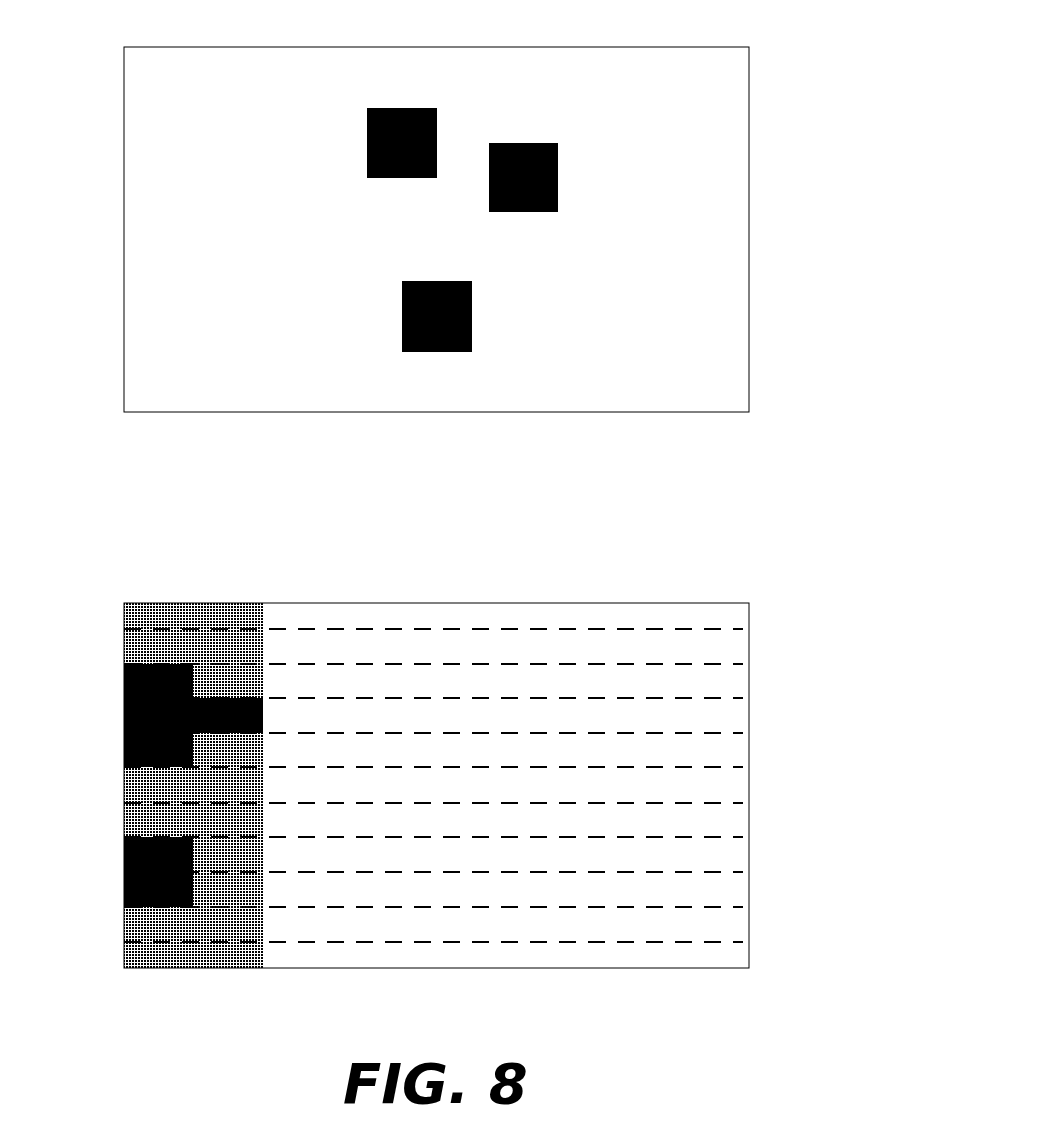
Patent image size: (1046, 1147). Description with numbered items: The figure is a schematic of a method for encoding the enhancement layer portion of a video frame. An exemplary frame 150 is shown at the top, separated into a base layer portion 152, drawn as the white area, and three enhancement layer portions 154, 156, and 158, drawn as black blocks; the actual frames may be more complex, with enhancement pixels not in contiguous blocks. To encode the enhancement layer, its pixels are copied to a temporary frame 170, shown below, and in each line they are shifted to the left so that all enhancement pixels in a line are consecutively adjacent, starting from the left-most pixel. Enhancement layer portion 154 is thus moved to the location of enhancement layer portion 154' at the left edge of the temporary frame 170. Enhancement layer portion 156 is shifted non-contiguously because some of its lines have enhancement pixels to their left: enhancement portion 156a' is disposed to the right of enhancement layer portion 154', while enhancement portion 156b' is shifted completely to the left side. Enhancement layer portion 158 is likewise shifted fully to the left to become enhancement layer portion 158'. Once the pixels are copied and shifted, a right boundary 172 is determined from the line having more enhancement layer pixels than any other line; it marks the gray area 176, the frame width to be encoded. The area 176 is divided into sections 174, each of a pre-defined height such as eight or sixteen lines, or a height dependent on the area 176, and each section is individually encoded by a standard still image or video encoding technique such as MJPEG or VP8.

The exemplary frame 150 is at (456, 232).
The base layer portion 152 is at (722, 47).
The enhancement layer portion 154 is at (429, 126).
The enhancement layer portion 156 is at (540, 143).
The enhancement layer portion 158 is at (462, 301).
The temporary frame 170 is at (428, 778).
The right boundary 172 is at (264, 602).
The sections 174 is at (738, 629).
The area 176 is at (136, 608).
The enhancement layer portion 154' is at (114, 697).
The enhancement portion 156a' is at (228, 644).
The enhancement portion 156b' is at (109, 750).
The enhancement layer portion 158' is at (114, 872).